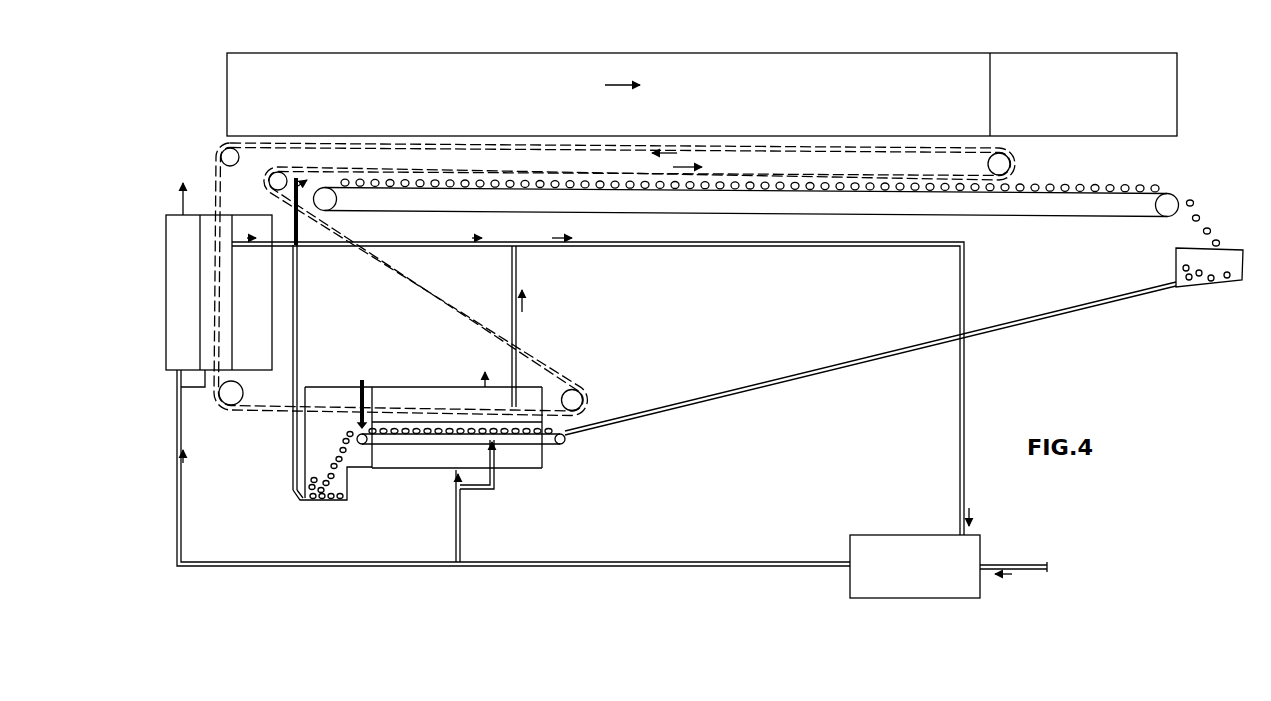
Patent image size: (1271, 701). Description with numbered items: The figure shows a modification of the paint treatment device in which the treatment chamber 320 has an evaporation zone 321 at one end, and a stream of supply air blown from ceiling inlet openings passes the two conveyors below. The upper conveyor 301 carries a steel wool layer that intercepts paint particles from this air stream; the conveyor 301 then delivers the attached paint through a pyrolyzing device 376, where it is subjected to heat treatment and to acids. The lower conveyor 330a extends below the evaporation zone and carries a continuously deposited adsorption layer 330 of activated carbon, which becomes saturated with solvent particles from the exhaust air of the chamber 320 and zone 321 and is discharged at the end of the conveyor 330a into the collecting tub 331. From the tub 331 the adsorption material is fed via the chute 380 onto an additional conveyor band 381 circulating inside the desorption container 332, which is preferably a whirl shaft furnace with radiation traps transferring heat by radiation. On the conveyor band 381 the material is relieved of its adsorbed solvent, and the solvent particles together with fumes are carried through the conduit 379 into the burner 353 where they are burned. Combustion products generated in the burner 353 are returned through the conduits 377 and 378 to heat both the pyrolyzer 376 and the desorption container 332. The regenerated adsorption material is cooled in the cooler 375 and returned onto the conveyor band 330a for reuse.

The treatment chamber 320 is at (583, 67).
The evaporation zone 321 is at (1025, 67).
The conveyor 301 is at (642, 146).
The adsorption material layer 330 is at (795, 193).
The lower conveyor 330a is at (830, 193).
The collecting tub 331 is at (1200, 287).
The chute 380 is at (878, 358).
The conduit 379 is at (700, 248).
The pyrolyzing device 376 is at (173, 237).
The conduit 377 is at (181, 527).
The conduit 378 is at (455, 525).
The cooler 375 is at (317, 465).
The desorption container 332 is at (423, 392).
The additional conveyor band 381 is at (408, 438).
The burner 353 is at (920, 598).